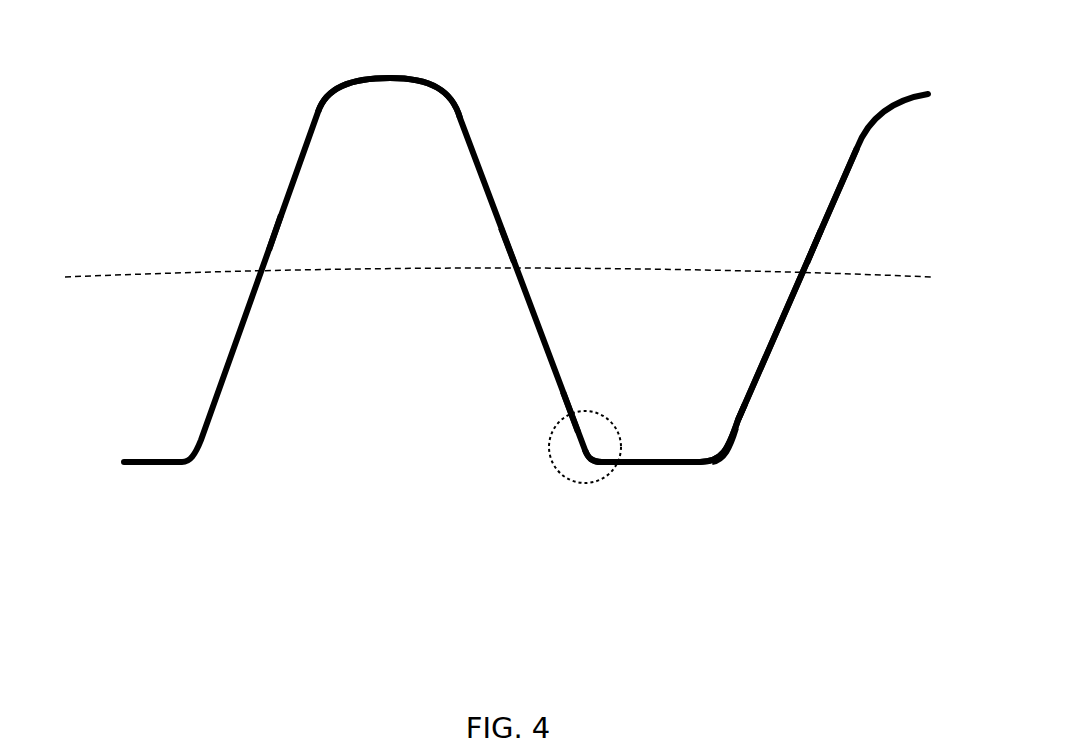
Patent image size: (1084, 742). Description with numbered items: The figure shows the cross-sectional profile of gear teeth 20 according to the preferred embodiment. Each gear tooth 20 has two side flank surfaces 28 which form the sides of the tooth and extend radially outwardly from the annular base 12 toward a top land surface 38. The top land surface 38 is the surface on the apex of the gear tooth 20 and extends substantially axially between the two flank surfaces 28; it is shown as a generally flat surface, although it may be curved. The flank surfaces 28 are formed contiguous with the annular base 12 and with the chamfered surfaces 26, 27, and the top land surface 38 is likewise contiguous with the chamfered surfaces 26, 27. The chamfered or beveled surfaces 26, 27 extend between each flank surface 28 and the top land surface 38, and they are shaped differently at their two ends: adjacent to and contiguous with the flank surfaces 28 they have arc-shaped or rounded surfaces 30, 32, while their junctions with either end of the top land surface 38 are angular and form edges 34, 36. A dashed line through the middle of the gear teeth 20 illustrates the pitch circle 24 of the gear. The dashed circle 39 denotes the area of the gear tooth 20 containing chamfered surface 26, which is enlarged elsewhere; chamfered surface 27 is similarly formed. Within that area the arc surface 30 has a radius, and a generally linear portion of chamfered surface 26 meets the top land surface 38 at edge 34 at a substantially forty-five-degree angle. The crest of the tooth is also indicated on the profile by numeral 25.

The annular base 12 is at (342, 90).
The gear tooth 20 is at (743, 417).
The pitch circle 24 is at (176, 275).
The crest 25 is at (412, 86).
The chamfered surface 26 is at (591, 446).
The chamfered surface 27 is at (722, 442).
The flank surface 28 is at (503, 241).
The arc surface 30 is at (577, 443).
The arc surface 32 is at (723, 447).
The edge 34 is at (594, 455).
The edge 36 is at (706, 460).
The top land surface 38 is at (650, 462).
The dashed circle 39 is at (556, 490).